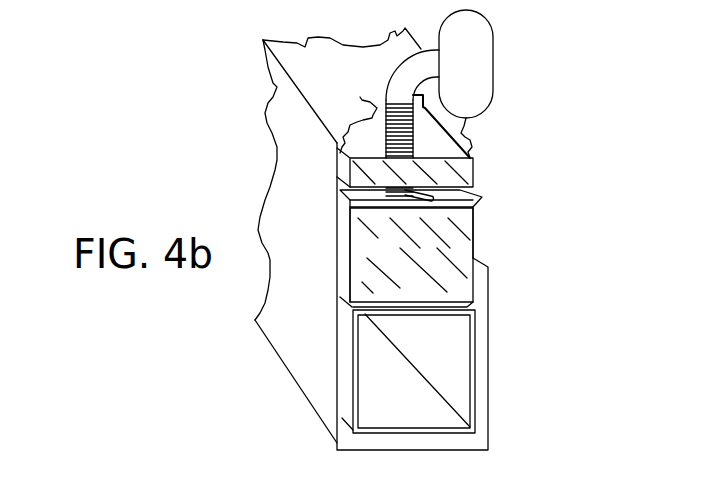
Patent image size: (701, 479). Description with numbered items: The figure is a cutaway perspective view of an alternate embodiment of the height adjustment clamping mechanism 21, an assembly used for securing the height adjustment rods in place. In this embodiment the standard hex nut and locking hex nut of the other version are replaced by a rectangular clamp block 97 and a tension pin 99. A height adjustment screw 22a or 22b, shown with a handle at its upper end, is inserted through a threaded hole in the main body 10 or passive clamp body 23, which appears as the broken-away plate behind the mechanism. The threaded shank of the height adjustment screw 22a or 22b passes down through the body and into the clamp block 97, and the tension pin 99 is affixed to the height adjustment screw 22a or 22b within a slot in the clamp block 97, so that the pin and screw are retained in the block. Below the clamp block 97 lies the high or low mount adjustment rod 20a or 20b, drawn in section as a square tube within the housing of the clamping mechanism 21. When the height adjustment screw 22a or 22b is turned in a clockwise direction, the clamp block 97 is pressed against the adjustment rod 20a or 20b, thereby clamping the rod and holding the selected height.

The passive clamp body 23 is at (269, 235).
The main body 10 is at (296, 118).
The height adjustment screw 22a is at (536, 84).
The height adjustment screw 22b is at (422, 67).
The tension pin 99 is at (458, 193).
The height adjustment clamping mechanism 21 is at (507, 233).
The rectangular clamp block 97 is at (455, 279).
The high mount adjustment rod 20a is at (291, 371).
The low mount adjustment rod 20b is at (348, 335).